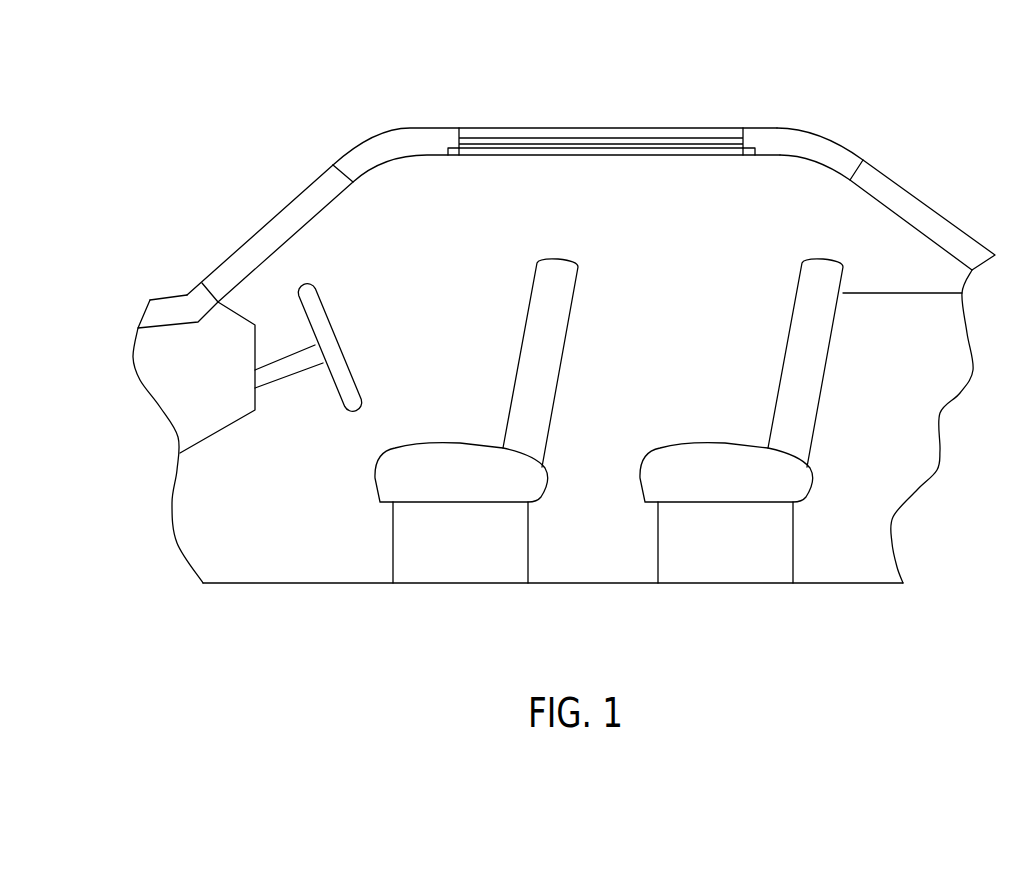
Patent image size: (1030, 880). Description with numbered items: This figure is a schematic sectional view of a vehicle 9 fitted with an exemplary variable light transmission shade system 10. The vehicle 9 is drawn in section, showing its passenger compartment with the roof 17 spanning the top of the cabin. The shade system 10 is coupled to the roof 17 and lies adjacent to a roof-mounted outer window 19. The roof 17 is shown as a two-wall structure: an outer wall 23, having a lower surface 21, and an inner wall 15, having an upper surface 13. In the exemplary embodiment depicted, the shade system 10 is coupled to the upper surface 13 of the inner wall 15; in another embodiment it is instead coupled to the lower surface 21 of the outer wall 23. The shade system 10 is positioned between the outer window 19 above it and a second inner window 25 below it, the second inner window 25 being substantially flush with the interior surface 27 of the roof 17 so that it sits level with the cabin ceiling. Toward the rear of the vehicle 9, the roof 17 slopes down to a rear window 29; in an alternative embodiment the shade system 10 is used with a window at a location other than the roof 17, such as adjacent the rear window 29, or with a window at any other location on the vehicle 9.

The vehicle 9 is at (209, 111).
The variable light transmission shade system 10 is at (607, 143).
The upper surface 13 is at (427, 152).
The inner wall 15 is at (402, 157).
The roof 17 is at (771, 125).
The roof-mounted outer window 19 is at (597, 127).
The lower surface 21 is at (369, 164).
The outer wall 23 is at (366, 147).
The second inner window 25 is at (509, 158).
The interior surface 27 is at (779, 158).
The rear window 29 is at (941, 186).